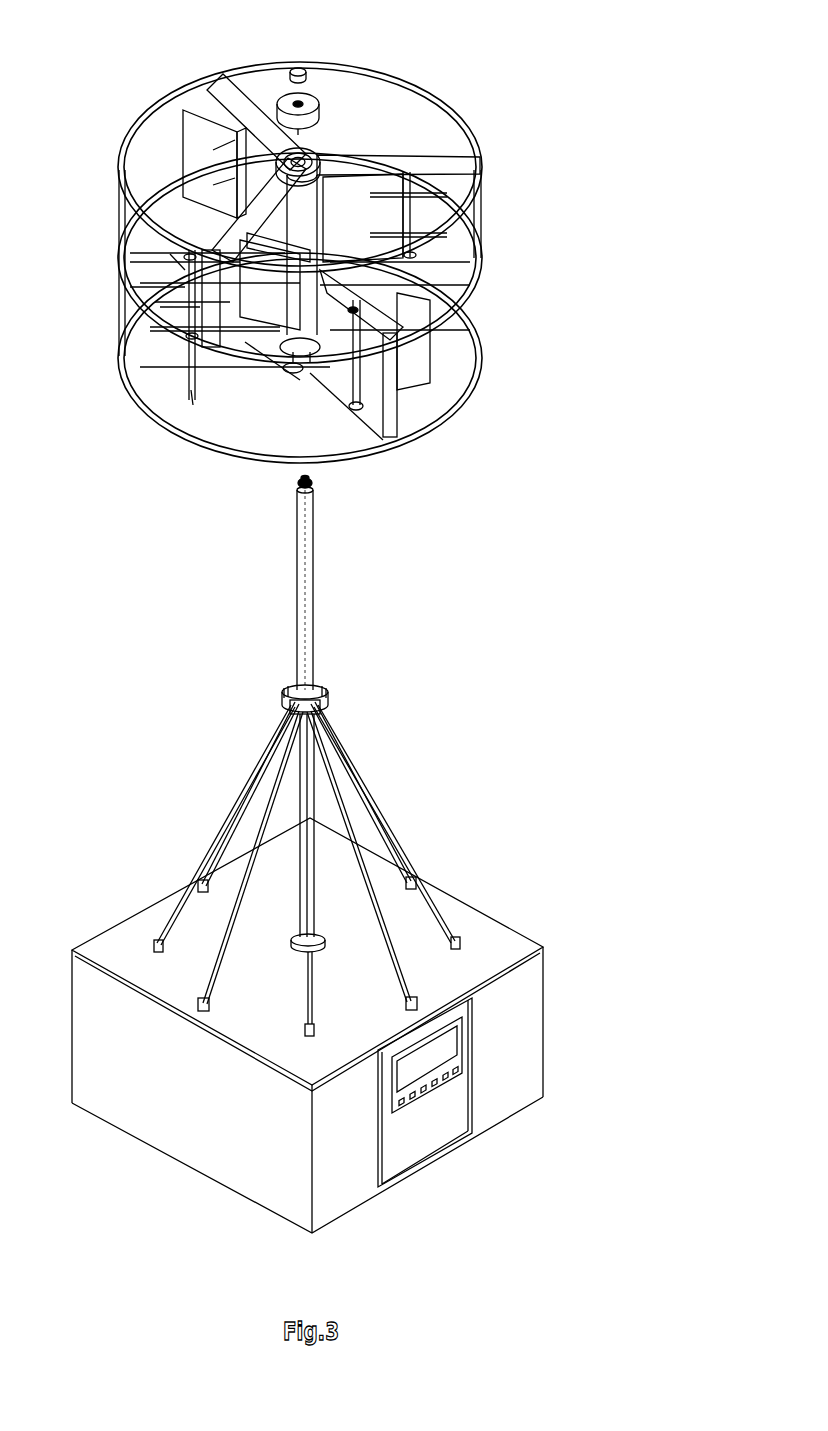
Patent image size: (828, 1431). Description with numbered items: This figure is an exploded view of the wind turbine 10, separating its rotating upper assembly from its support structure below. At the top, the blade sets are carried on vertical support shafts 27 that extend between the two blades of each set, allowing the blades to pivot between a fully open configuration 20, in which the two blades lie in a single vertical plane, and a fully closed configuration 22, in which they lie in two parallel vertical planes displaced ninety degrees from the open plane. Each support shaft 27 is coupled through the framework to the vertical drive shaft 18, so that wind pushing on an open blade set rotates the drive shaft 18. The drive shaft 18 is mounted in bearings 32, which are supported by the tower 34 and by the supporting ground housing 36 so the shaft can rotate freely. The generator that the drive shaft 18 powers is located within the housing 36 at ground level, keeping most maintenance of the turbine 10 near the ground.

The wind turbine 10 is at (605, 95).
The drive shaft 18 is at (304, 565).
The fully open configuration 20 is at (360, 215).
The fully closed configuration 22 is at (270, 292).
The vertical support shaft 27 is at (425, 216).
The bearings 32 is at (315, 149).
The tower 34 is at (413, 782).
The supporting ground housing 36 is at (530, 1049).